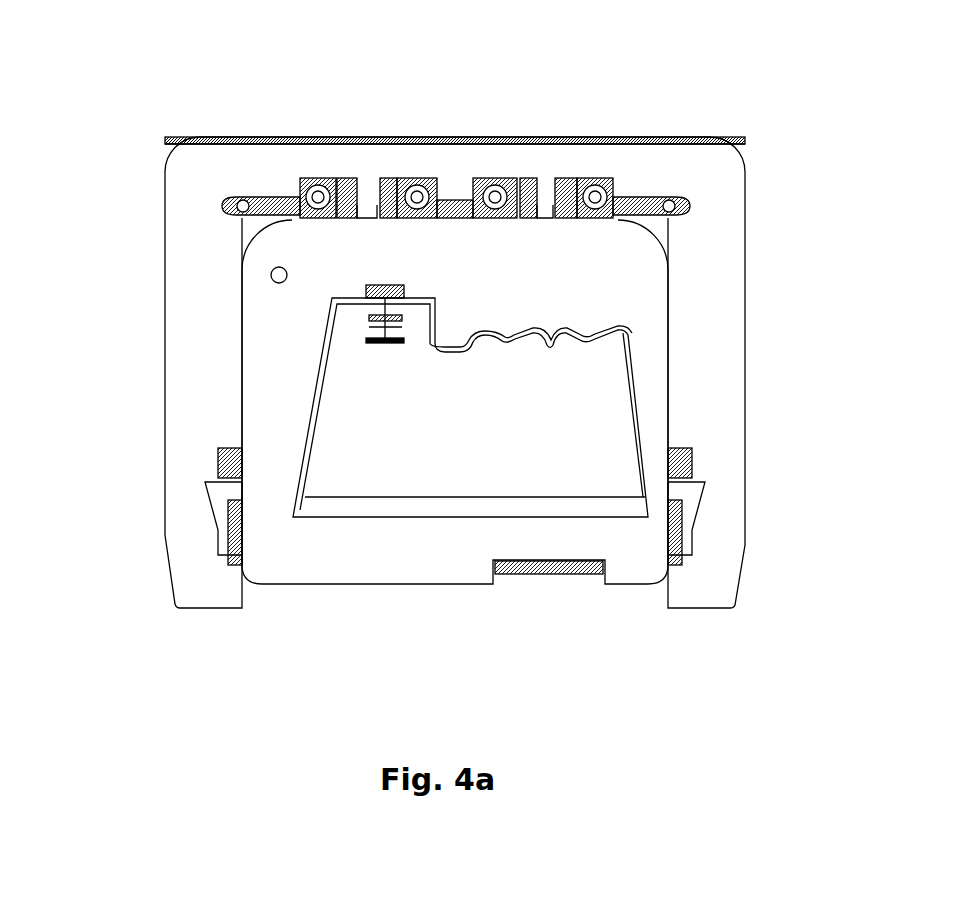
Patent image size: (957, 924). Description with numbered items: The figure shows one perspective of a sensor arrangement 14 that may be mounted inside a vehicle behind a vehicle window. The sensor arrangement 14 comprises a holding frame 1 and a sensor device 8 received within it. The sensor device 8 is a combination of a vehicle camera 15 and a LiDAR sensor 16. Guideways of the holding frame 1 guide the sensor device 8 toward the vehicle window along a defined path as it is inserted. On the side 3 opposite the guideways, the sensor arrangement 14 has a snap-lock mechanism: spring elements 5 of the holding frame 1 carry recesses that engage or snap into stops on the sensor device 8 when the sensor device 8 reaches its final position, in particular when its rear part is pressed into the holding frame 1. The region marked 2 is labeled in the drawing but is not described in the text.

The sensor arrangement 14 is at (82, 105).
The holding frame 1 is at (712, 330).
The bottom side 2 is at (455, 620).
The side 3 is at (452, 96).
The spring elements 5 is at (268, 205).
The sensor device 8 is at (268, 360).
The vehicle camera 15 is at (380, 315).
The LiDAR sensor 16 is at (505, 343).